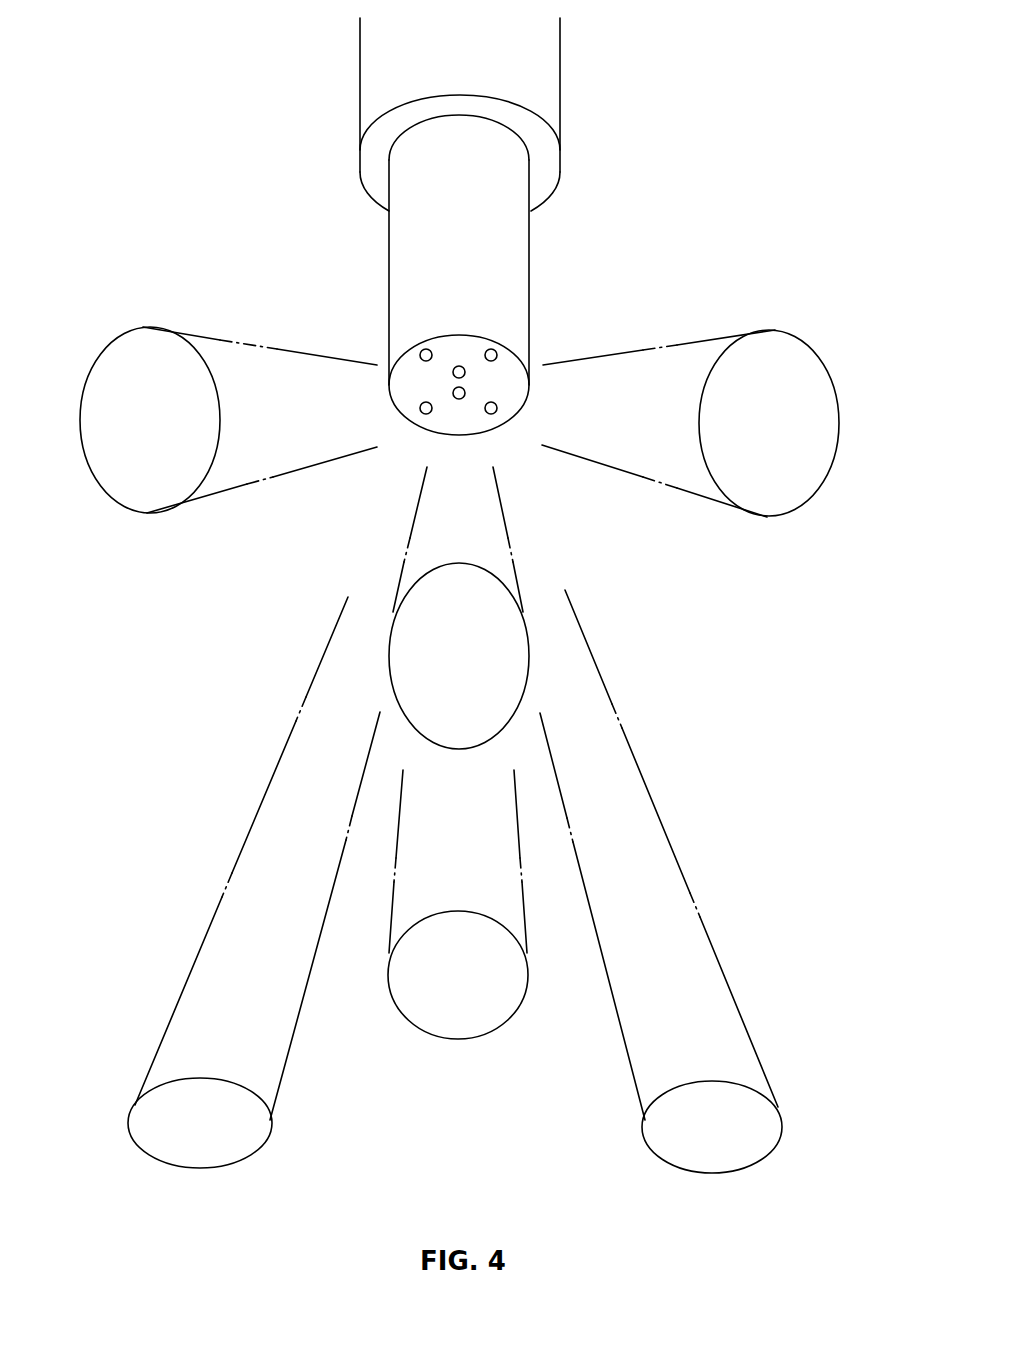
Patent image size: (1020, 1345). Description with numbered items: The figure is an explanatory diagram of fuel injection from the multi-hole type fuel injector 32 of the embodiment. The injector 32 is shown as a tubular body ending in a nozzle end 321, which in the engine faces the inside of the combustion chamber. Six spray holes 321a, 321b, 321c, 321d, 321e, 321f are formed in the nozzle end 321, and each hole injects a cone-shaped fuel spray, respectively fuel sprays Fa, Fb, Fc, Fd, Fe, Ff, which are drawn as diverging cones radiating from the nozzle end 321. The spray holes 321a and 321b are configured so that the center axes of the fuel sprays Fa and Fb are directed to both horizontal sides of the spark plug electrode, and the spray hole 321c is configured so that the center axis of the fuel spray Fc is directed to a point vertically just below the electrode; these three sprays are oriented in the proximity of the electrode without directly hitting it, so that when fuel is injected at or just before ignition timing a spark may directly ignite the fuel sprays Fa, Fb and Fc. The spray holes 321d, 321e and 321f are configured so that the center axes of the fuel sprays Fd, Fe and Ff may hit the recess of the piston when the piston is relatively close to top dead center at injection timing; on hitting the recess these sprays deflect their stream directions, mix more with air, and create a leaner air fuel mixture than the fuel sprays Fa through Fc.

The fuel injector 32 is at (547, 93).
The nozzle end 321 is at (457, 356).
The spray hole 321a is at (420, 349).
The spray hole 321b is at (492, 348).
The spray hole 321c is at (463, 378).
The spray hole 321d is at (458, 399).
The spray hole 321e is at (423, 414).
The spray hole 321f is at (494, 414).
The fuel spray Fa is at (218, 338).
The fuel spray Fb is at (717, 337).
The fuel spray Fc is at (502, 663).
The fuel spray Fd is at (483, 1015).
The fuel spray Fe is at (155, 1135).
The fuel spray Ff is at (758, 1138).